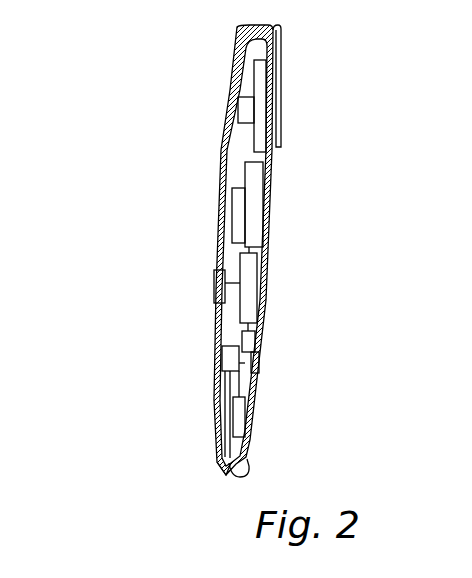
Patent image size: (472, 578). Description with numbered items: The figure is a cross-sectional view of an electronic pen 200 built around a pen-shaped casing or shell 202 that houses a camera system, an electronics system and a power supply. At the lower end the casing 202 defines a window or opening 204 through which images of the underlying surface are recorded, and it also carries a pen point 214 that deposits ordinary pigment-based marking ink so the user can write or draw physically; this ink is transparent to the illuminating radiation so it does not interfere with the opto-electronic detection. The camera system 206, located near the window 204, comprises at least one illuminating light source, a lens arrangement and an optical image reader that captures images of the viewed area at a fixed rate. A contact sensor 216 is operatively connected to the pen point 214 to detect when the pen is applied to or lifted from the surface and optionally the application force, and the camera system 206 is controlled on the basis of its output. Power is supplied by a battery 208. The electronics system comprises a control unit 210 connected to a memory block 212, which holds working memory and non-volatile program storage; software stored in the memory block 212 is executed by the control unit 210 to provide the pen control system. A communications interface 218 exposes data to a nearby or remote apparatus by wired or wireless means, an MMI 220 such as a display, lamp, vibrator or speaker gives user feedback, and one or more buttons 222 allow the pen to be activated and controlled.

The pen 200 is at (172, 75).
The casing 202 is at (281, 168).
The window 204 is at (247, 466).
The camera system 206 is at (246, 416).
The battery 208 is at (233, 212).
The control unit 210 is at (258, 282).
The memory block 212 is at (262, 207).
The pen point 214 is at (227, 471).
The contact sensor 216 is at (222, 360).
The communications interface 218 is at (257, 101).
The MMI 220 is at (214, 283).
The buttons 222 is at (260, 358).